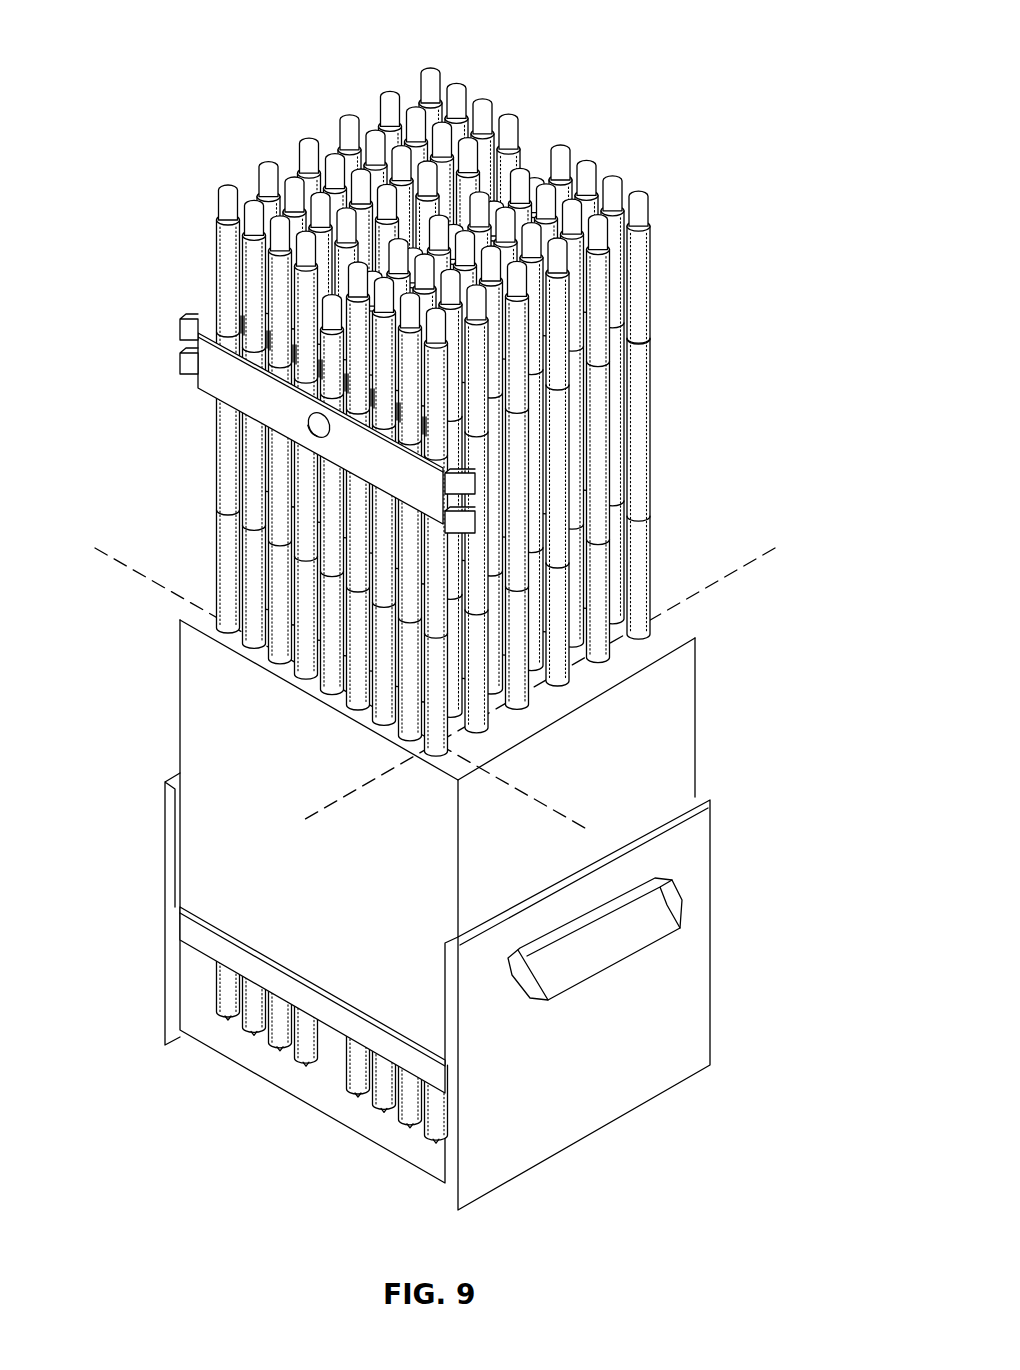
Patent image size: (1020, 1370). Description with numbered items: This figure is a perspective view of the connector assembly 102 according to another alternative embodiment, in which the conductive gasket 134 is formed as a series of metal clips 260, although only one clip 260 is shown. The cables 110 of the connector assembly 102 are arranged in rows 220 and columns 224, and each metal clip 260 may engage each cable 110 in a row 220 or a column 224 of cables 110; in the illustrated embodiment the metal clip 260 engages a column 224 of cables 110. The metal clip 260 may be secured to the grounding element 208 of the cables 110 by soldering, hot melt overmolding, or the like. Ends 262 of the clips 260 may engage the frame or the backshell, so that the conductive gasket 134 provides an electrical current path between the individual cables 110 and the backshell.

The connector assembly 102 is at (586, 58).
The cable 110 is at (222, 232).
The conductive gasket 134 is at (238, 385).
The grounding element 208 is at (650, 372).
The row 220 is at (750, 565).
The column 224 is at (110, 560).
The metal clip 260 is at (285, 408).
The end 262 is at (193, 321).